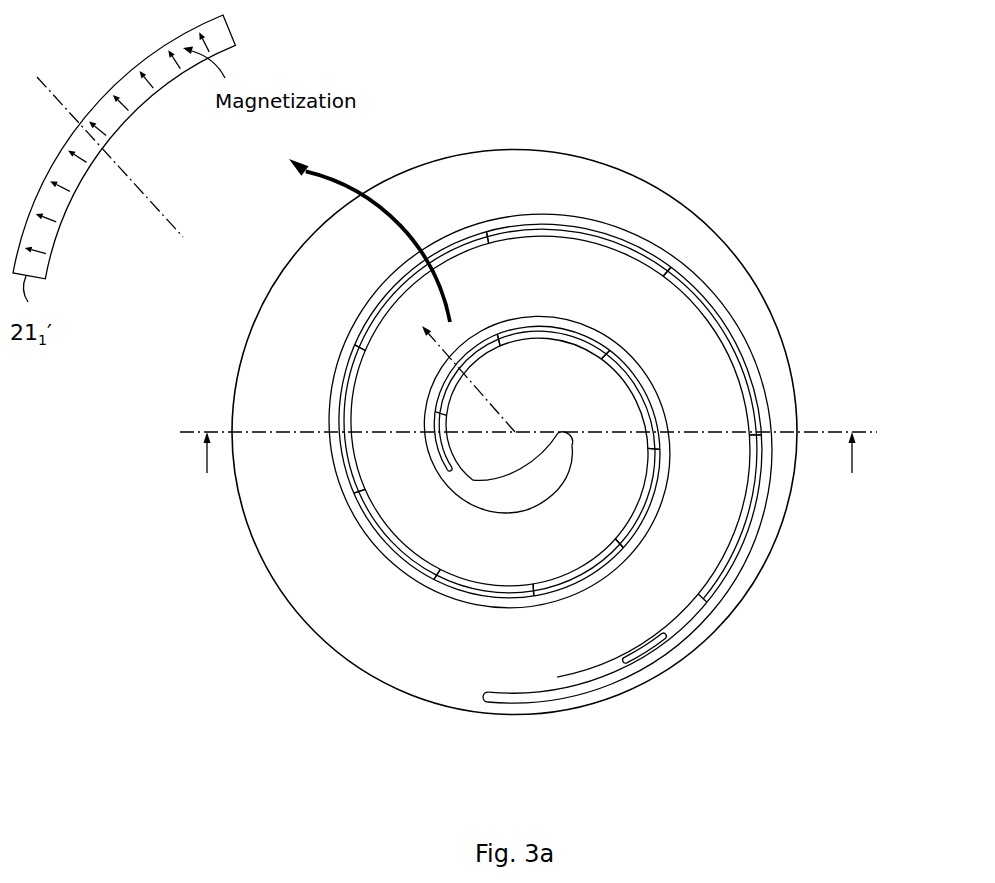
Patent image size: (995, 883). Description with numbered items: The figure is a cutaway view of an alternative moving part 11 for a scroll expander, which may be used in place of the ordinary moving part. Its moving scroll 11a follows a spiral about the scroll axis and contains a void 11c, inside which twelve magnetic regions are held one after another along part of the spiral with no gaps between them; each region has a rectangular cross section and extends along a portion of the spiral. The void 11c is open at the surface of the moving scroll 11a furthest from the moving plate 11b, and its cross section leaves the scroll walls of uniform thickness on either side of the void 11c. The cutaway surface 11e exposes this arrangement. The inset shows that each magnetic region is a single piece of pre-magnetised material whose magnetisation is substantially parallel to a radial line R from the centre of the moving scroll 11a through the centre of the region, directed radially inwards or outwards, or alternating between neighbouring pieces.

The alternative moving part 11 is at (723, 158).
The moving scroll 11a is at (344, 657).
The moving plate 11b is at (520, 699).
The void 11c is at (660, 652).
The surface of carrier disc 11e is at (292, 481).
The radial direction of magnetization R is at (162, 207).